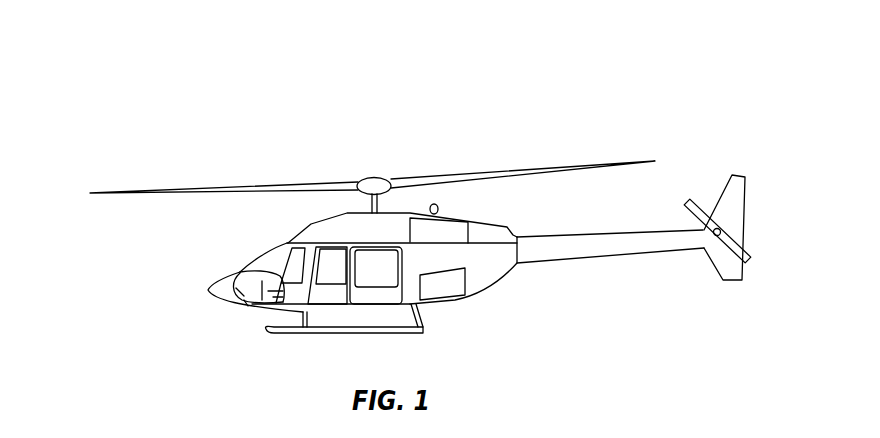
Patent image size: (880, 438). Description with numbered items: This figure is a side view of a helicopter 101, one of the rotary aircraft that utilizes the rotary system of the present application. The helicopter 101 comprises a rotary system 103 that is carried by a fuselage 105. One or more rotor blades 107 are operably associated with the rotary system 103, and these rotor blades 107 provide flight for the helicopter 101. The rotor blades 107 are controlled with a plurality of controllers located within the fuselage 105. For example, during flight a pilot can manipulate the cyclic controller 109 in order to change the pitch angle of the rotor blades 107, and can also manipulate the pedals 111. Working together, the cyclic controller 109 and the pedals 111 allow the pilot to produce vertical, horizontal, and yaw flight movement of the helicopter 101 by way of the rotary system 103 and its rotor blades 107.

The helicopter 101 is at (137, 85).
The rotary system 103 is at (302, 103).
The fuselage 105 is at (287, 246).
The rotor blades 107 is at (516, 176).
The cyclic controller 109 is at (242, 295).
The pedals 111 is at (244, 300).